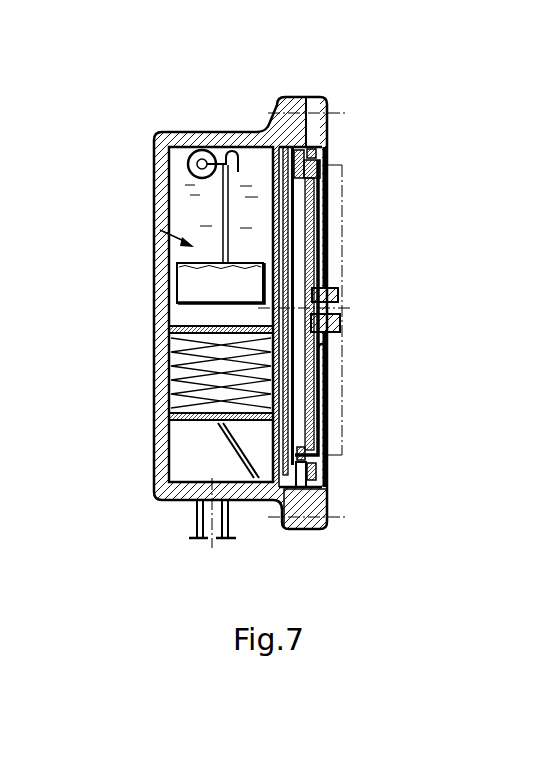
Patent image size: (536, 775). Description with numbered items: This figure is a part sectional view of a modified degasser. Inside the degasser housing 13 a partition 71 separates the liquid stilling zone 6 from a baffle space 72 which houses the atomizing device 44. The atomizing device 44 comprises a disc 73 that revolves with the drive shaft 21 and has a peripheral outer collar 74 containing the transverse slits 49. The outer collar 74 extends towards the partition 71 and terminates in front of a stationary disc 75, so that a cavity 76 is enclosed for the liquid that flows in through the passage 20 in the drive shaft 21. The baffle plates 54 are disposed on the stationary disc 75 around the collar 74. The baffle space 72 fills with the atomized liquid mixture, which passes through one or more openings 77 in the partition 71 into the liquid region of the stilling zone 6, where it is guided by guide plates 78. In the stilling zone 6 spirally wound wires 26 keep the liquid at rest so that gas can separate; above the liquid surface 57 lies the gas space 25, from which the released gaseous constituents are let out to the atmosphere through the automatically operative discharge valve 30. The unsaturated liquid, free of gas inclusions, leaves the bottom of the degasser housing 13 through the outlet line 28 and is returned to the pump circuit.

The degasser housing 13 is at (190, 130).
The atomizing device 44 is at (253, 132).
The baffle plates 54 is at (310, 147).
The discharge valve 30 is at (190, 160).
The transverse slits 49 is at (308, 162).
The gas space 25 is at (188, 206).
The disc 73 is at (315, 198).
The liquid stilling zone 6 is at (172, 236).
The partition 71 is at (322, 222).
The baffle space 72 is at (314, 256).
The liquid surface 57 is at (196, 265).
The drive shaft 21 is at (328, 303).
The passage 20 is at (318, 318).
The spirally wound wires 26 is at (175, 348).
The stationary disc 75 is at (314, 380).
The cavity 76 is at (305, 407).
The guide plates 78 is at (222, 428).
The outer collar 74 is at (306, 474).
The outlet line 28 is at (200, 518).
The openings 77 is at (292, 505).